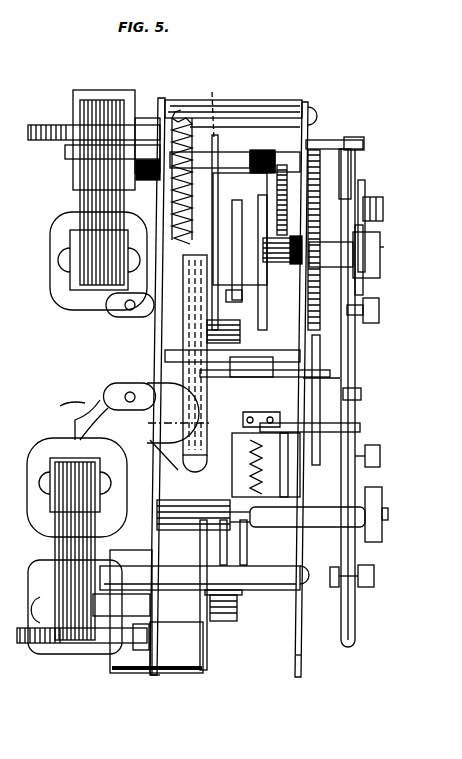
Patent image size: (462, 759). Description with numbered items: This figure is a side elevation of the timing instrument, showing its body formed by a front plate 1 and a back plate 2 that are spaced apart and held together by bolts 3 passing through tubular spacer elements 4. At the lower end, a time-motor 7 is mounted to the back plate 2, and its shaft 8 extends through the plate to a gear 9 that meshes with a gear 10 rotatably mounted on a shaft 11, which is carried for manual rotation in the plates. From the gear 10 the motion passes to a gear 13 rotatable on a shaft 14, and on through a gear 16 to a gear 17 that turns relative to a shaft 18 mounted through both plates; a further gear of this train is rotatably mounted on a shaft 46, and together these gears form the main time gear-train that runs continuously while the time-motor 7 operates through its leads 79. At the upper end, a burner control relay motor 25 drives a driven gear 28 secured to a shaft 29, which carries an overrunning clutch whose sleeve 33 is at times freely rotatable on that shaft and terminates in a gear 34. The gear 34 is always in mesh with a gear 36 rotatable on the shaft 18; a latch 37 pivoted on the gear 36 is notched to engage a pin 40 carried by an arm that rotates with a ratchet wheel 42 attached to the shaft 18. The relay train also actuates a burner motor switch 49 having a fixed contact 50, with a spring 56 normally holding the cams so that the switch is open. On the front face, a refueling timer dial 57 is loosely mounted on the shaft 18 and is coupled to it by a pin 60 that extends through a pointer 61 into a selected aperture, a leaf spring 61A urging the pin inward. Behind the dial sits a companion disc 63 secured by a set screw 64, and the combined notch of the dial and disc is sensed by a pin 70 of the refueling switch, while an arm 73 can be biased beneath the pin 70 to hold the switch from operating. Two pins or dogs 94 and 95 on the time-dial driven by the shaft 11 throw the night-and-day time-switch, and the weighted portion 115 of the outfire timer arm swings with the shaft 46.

The front plate 1 is at (308, 104).
The back plate 2 is at (162, 98).
The bolts 3 is at (313, 108).
The tubular spacer elements 4 is at (226, 118).
The time-motor 7 is at (55, 548).
The shaft 8 is at (235, 622).
The gear 9 is at (218, 622).
The gear 10 is at (218, 538).
The shaft 11 is at (388, 514).
The gear 13 is at (200, 496).
The shaft 14 is at (150, 452).
The gear 16 is at (238, 360).
The gear 17 is at (218, 200).
The shaft 18 is at (383, 253).
The burner control relay motor 25 is at (80, 196).
The driven gear 28 is at (130, 172).
The shaft 29 is at (212, 203).
The sleeve 33 is at (243, 112).
The gear 34 is at (268, 125).
The gear 36 is at (277, 184).
The latch 37 is at (252, 236).
The pin 40 is at (222, 320).
The ratchet wheel 42 is at (234, 220).
The shaft 46 is at (315, 368).
The burner motor switch 49 is at (160, 348).
The fixed contact 50 is at (182, 466).
The spring 56 is at (188, 108).
The refueling timer dial 57 is at (352, 161).
The pin 60 is at (384, 211).
The pointer 61 is at (366, 191).
The leaf spring 61A is at (362, 230).
The companion disc 63 is at (352, 176).
The set screw 64 is at (380, 313).
The pin 70 is at (362, 140).
The arm 73 is at (335, 141).
The leads 79 is at (69, 417).
The pin or dog 94 is at (330, 420).
The pin or dog 95 is at (330, 590).
The weighted portion 115 is at (312, 378).